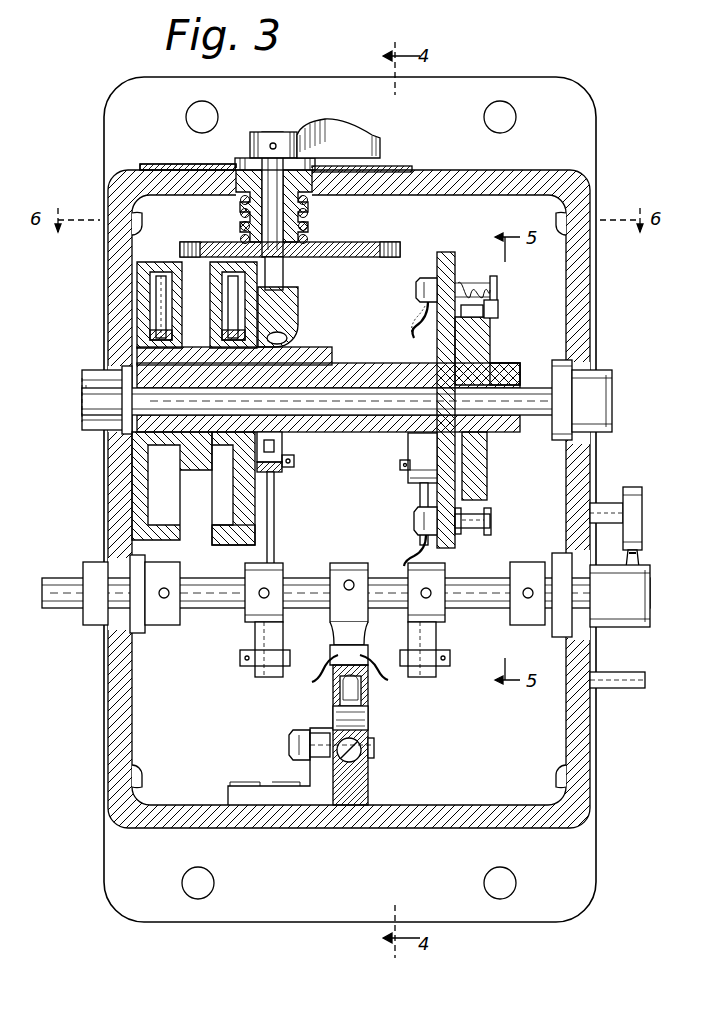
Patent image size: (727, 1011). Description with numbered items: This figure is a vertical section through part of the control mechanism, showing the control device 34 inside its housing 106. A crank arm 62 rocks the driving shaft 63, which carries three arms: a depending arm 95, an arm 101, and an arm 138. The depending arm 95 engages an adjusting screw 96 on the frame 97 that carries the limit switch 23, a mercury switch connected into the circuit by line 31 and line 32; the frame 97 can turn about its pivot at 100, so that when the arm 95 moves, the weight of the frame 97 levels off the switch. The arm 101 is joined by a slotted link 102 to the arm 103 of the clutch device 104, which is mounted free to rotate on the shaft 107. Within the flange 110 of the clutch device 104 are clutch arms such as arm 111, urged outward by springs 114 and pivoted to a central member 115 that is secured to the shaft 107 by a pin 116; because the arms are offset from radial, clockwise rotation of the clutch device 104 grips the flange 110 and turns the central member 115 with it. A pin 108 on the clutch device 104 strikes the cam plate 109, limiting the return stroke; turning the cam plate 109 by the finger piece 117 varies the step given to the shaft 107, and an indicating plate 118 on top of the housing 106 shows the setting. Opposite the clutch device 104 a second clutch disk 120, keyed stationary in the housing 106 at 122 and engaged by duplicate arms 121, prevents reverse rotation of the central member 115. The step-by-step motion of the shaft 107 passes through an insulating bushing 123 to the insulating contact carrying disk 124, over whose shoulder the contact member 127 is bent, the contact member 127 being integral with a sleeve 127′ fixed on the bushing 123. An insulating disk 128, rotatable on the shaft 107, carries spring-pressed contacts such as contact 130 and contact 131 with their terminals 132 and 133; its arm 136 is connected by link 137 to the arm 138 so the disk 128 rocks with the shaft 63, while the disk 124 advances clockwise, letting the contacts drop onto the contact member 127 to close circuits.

The control device 34 is at (600, 340).
The housing 106 is at (442, 180).
The indicating plate 118 is at (196, 166).
The finger piece 117 is at (320, 132).
The cam 109 is at (346, 242).
The pin 108 is at (286, 279).
The arms 121 is at (140, 318).
The flange 110 is at (168, 268).
The arm 111 is at (226, 286).
The springs 114 is at (226, 330).
The pin 116 is at (203, 398).
The shaft 107 is at (84, 400).
The key 122 is at (104, 432).
The bushing 123 is at (535, 432).
The second clutch disk 120 is at (134, 498).
The central member 115 is at (203, 464).
The clutch device 104 is at (258, 540).
The arm 103 is at (284, 445).
The link 102 is at (276, 508).
The disk 128 is at (446, 253).
The terminal 132 is at (420, 290).
The contact 131 is at (470, 280).
The contact member 127 is at (488, 322).
The sleeve 127′ is at (506, 363).
The contact carrying disk 124 is at (488, 474).
The arm 136 is at (410, 468).
The terminal 133 is at (420, 518).
The link 137 is at (412, 544).
The contact 130 is at (492, 521).
The crank arm 62 is at (646, 546).
The driving shaft 63 is at (55, 610).
The arm 101 is at (283, 638).
The arm 138 is at (445, 638).
The depending arm 95 is at (368, 638).
The line 31 is at (318, 680).
The line 32 is at (382, 680).
The limit switch 23 is at (338, 694).
The frame 97 is at (368, 724).
The adjusting screw 96 is at (360, 760).
The pivot 100 is at (374, 750).